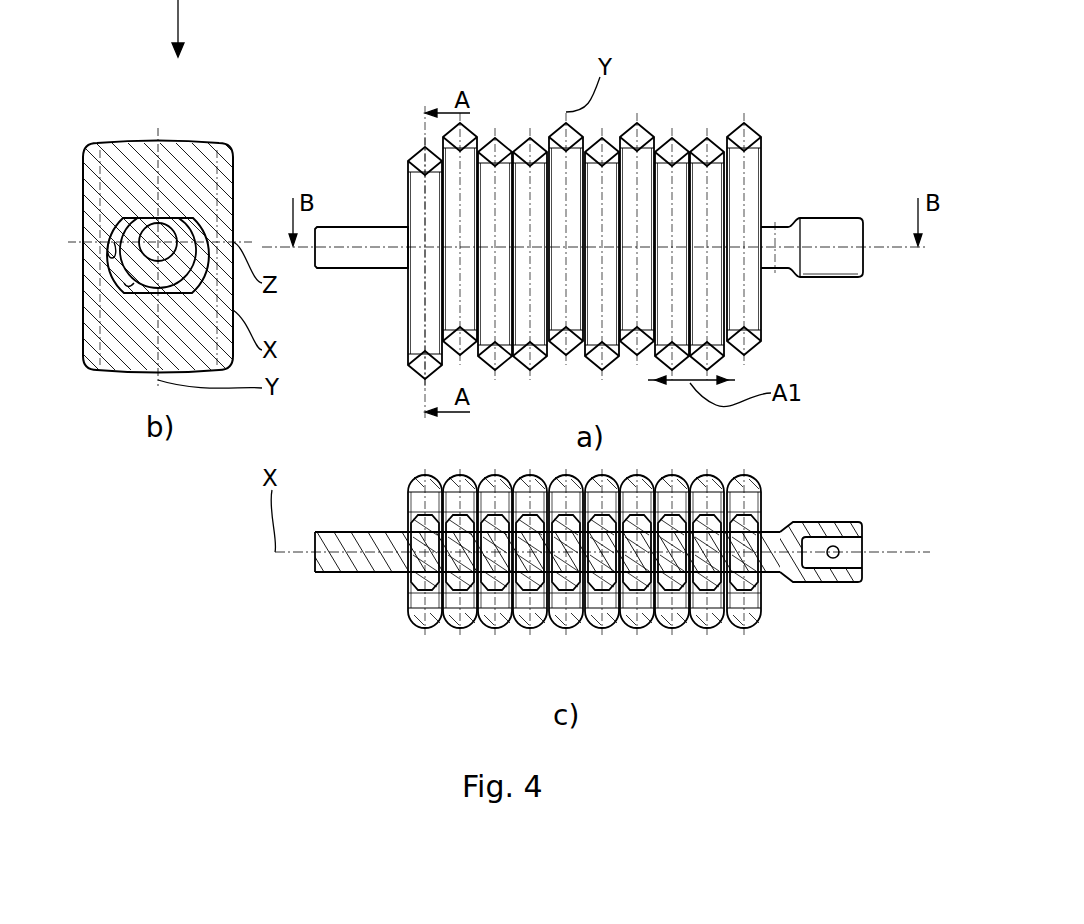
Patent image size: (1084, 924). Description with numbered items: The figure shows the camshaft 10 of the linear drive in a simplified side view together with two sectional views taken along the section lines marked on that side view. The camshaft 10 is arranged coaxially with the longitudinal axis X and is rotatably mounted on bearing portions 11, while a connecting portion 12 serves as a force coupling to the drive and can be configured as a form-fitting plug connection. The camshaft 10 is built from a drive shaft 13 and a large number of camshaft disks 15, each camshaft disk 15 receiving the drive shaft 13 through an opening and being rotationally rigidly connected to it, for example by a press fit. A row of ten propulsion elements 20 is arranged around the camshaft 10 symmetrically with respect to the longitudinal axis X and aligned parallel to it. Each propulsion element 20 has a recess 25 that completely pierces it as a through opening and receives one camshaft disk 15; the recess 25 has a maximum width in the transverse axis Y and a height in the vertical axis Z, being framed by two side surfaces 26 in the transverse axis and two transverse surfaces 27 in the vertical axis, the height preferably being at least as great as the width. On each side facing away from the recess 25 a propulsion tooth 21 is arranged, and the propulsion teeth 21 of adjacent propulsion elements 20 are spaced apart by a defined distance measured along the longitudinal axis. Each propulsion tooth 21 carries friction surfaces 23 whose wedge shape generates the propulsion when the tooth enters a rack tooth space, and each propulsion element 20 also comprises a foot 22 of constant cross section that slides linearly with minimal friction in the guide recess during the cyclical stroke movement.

In FIG. 4b, the camshaft 10 is at (185, 167).
In FIG. 4a, the camshaft 10 is at (765, 238).
In FIG. 4c, the camshaft 10 is at (776, 545).
In FIG. 4a, the bearing portions 11 is at (340, 242).
In FIG. 4c, the bearing portions 11 is at (343, 540).
In FIG. 4c, the connecting portion 12 is at (845, 552).
In FIG. 4b, the drive shaft 13 is at (160, 230).
In FIG. 4c, the drive shaft 13 is at (637, 598).
In FIG. 4b, the camshaft disk 15 is at (185, 233).
In FIG. 4c, the camshaft disk 15 is at (497, 515).
In FIG. 4a, the propulsion element 20 is at (544, 212).
In FIG. 4c, the propulsion element 20 is at (577, 552).
In FIG. 4a, the propulsion tooth 21 is at (707, 142).
In FIG. 4c, the propulsion tooth 21 is at (565, 555).
In FIG. 4b, the foot 22 is at (225, 218).
In FIG. 4b, the friction surface 23 is at (122, 143).
In FIG. 4a, the friction surface 23 is at (414, 145).
In FIG. 4b, the recess 25 is at (122, 228).
In FIG. 4c, the recess 25 is at (517, 557).
In FIG. 4b, the side surfaces 26 is at (128, 285).
In FIG. 4b, the transverse surfaces 27 is at (110, 250).